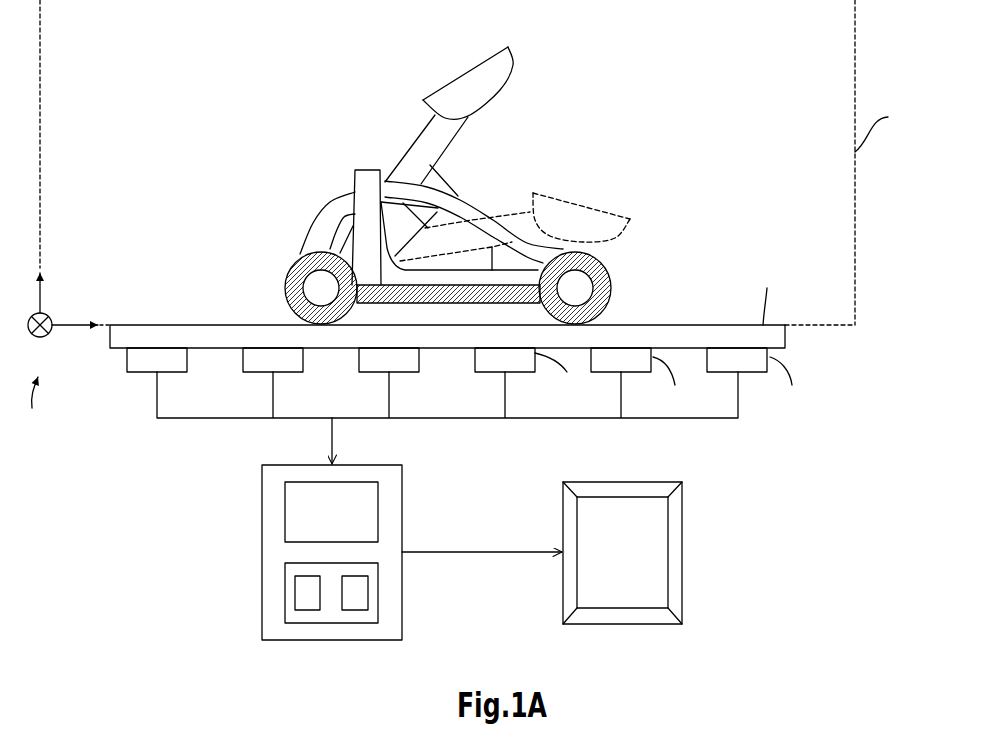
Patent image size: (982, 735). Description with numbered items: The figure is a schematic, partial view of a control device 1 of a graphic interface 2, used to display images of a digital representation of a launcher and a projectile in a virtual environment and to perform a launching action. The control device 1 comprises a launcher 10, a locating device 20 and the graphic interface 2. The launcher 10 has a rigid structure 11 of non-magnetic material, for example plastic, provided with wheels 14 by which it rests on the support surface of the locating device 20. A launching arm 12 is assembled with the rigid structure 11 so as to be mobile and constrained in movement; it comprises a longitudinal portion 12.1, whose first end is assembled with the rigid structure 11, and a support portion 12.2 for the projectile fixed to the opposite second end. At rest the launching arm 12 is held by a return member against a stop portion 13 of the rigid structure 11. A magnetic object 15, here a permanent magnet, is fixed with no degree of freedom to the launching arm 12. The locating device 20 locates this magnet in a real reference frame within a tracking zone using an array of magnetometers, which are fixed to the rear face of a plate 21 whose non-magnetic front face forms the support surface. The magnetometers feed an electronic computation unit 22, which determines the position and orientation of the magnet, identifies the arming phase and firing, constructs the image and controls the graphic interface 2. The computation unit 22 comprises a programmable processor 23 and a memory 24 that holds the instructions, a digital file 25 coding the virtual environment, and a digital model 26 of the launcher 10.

The control device 1 is at (110, 578).
The graphic interface 2 is at (683, 552).
The launcher 10 is at (243, 102).
The rigid structure 11 is at (317, 223).
The launching arm 12 is at (496, 103).
The longitudinal portion 12.1 is at (450, 140).
The support portion 12.2 is at (498, 88).
The stop portion 13 is at (378, 170).
The wheels 14 is at (615, 285).
The magnetic object 15 is at (447, 182).
The locating device 20 is at (230, 503).
The plate 21 is at (787, 337).
The electronic computation unit 22 is at (262, 552).
The programmable processor 23 is at (380, 510).
The memory 24 is at (380, 593).
The digital file 25 is at (307, 612).
The digital model 26 is at (355, 612).